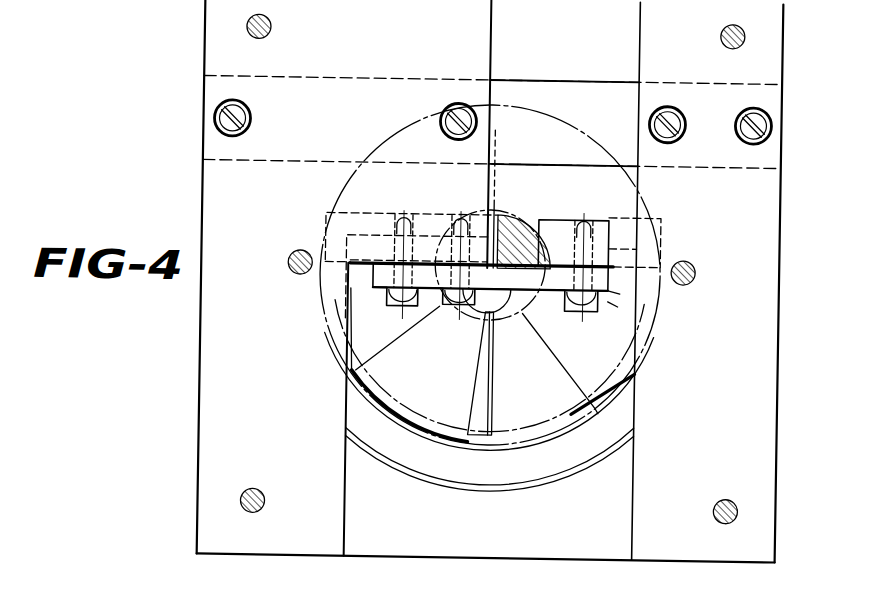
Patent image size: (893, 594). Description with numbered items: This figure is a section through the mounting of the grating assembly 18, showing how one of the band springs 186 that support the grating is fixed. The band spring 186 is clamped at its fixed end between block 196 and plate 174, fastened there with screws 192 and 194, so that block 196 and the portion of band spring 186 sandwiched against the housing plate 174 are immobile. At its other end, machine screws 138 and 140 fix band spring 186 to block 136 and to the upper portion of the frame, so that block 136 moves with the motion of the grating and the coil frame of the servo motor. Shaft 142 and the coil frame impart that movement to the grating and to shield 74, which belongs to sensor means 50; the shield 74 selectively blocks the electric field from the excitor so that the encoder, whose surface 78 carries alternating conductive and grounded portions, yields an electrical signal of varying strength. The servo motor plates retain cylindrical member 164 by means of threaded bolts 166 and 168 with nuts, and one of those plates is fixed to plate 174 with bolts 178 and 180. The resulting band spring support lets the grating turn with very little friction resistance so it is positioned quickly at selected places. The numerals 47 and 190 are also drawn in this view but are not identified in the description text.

The grating assembly 18 is at (345, 216).
The pivot hub 47 is at (523, 312).
The sensor means 50 is at (524, 497).
The shield 74 is at (398, 429).
The surface 78 is at (545, 416).
The block 136 is at (612, 290).
The machine screw 138 is at (477, 359).
The machine screw 140 is at (612, 300).
The shaft 142 is at (514, 218).
The cylindrical member 164 is at (590, 432).
The threaded bolt 166 is at (288, 268).
The threaded bolt 168 is at (691, 262).
The plate 174 is at (202, 366).
The bolt 178 is at (243, 31).
The bolt 180 is at (741, 33).
The band spring 186 is at (555, 302).
The block 190 is at (608, 228).
The screw 192 is at (398, 305).
The screw 194 is at (463, 308).
The block 196 is at (373, 282).